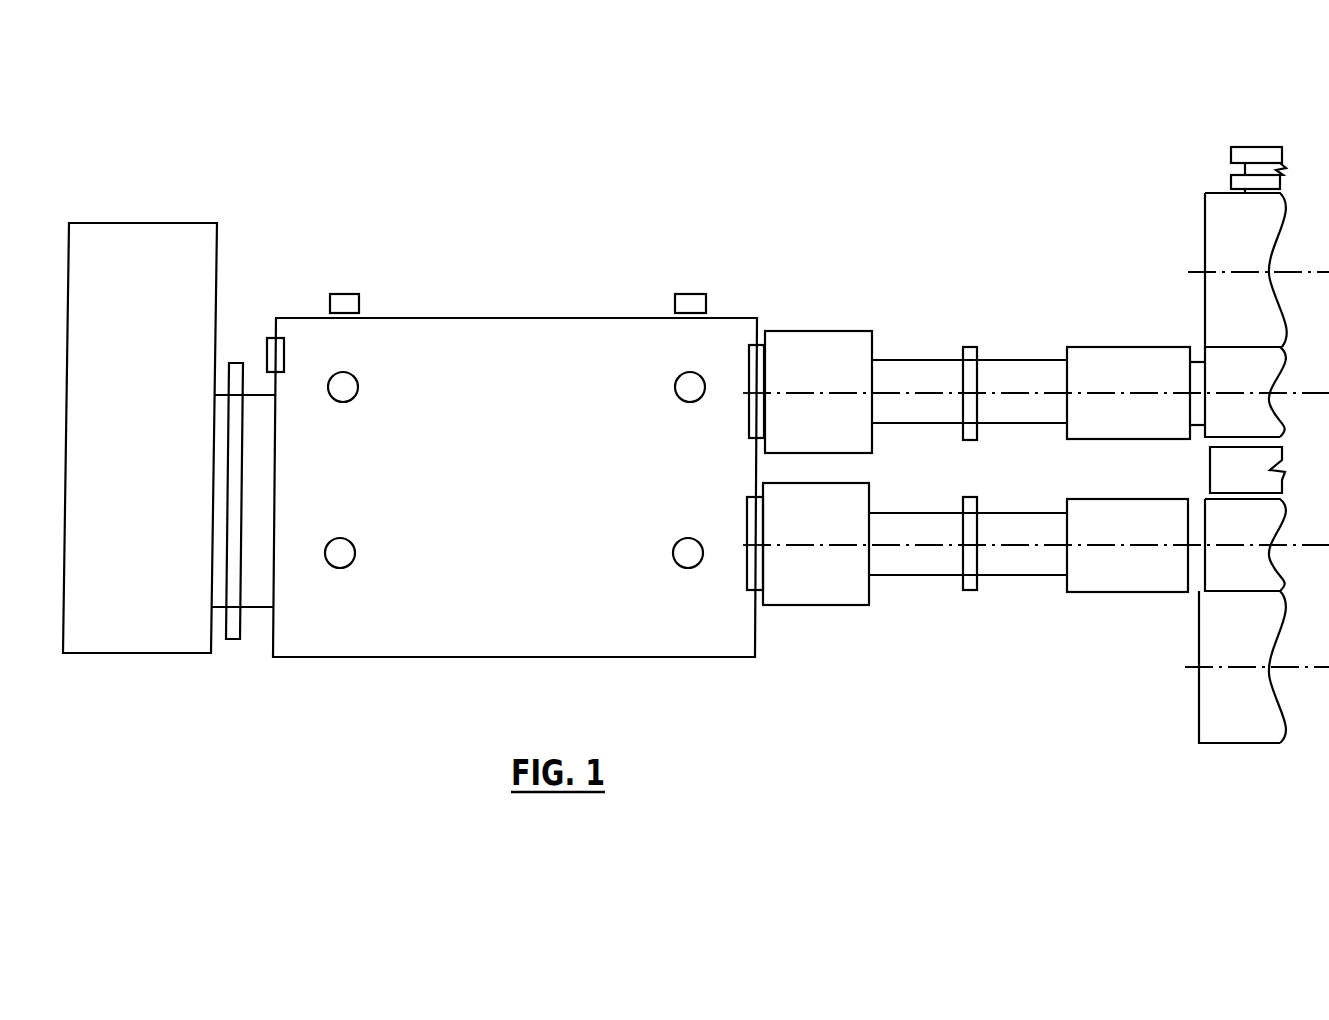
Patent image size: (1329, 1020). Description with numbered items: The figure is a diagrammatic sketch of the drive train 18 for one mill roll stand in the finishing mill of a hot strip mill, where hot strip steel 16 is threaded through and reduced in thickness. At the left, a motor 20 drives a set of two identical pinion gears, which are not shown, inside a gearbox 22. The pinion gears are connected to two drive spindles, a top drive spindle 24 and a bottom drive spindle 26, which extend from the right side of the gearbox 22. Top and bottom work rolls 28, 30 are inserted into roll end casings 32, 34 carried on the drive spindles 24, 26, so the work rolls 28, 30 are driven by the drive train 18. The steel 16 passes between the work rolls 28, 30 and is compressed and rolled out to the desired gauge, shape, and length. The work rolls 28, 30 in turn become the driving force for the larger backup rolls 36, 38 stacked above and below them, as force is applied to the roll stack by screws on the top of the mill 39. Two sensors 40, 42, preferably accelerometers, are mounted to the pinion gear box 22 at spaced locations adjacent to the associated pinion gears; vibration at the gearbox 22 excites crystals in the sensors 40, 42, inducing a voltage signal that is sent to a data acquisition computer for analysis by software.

The steel 16 is at (1215, 468).
The drive train 18 is at (486, 202).
The motor 20 is at (150, 229).
The gearbox 22 is at (523, 318).
The top drive spindle 24 is at (885, 358).
The bottom drive spindle 26 is at (878, 513).
The top work roll 28 is at (1212, 372).
The bottom work roll 30 is at (1215, 583).
The roll end casing 32 is at (1067, 383).
The roll end casing 34 is at (1067, 535).
The top backup roll 36 is at (1205, 248).
The bottom backup roll 38 is at (1198, 722).
The mill 39 is at (1217, 128).
The sensor 40 is at (678, 372).
The sensor 42 is at (688, 537).